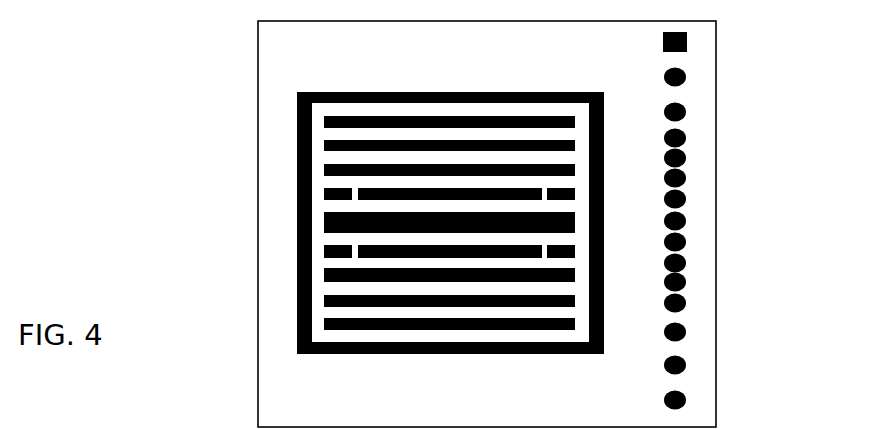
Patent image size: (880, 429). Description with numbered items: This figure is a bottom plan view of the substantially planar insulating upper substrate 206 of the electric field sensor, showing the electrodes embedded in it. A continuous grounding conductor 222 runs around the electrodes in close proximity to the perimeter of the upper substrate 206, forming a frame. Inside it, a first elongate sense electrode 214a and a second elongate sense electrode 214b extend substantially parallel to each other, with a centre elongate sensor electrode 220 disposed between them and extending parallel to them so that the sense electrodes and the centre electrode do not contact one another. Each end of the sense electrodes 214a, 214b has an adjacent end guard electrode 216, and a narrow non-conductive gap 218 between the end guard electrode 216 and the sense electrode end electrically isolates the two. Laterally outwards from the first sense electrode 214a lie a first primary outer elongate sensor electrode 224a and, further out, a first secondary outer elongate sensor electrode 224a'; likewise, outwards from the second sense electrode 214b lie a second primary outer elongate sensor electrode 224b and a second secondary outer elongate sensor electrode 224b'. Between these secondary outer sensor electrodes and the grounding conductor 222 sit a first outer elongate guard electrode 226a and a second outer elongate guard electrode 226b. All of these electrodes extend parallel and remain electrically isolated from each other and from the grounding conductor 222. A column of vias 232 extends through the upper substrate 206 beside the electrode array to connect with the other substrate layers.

The upper substrate 206 is at (716, 53).
The continuous grounding conductor 222 is at (455, 82).
The first outer elongate guard electrode 226a is at (415, 104).
The second outer elongate guard electrode 226b is at (412, 343).
The first elongate sense electrode 214a is at (415, 176).
The second elongate sense electrode 214b is at (413, 270).
The end guard electrode 216 is at (324, 197).
The first primary outer elongate sensor electrode 224a is at (563, 178).
The first secondary outer elongate sensor electrode 224a' is at (566, 112).
The second primary outer elongate sensor electrode 224b is at (563, 280).
The second secondary outer elongate sensor electrode 224b' is at (566, 333).
The centre elongate sensor electrode 220 is at (575, 221).
The non-conductive gap 218 is at (547, 270).
The via 232 is at (686, 164).